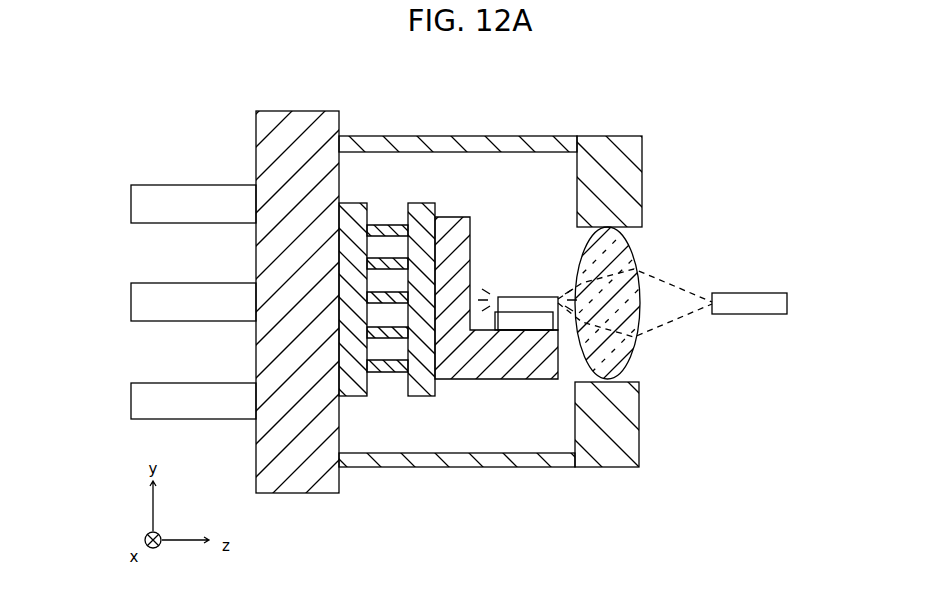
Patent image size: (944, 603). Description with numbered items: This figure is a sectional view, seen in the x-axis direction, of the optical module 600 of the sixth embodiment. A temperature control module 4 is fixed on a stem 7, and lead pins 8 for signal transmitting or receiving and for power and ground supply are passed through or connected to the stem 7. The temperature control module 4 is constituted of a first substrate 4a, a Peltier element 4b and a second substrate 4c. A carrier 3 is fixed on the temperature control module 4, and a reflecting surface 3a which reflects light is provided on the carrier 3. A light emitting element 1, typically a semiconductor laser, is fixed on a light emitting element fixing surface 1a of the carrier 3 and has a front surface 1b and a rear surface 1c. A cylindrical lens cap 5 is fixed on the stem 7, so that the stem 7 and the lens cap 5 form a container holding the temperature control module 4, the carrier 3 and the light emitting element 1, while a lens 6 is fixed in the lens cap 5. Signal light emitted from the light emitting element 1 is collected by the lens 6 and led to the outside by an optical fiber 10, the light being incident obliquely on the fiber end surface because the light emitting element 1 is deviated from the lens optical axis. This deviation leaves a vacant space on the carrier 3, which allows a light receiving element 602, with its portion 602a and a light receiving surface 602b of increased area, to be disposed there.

The optical module 600 is at (272, 72).
The stem 7 is at (272, 493).
The lead pins 8 is at (152, 197).
The cylindrical lens cap 5 is at (624, 144).
The temperature control module 4 is at (409, 300).
The first substrate 4a is at (357, 206).
The Peltier element 4b is at (368, 199).
The second substrate 4c is at (425, 206).
The carrier 3 is at (492, 300).
The reflecting surface 3a is at (470, 225).
The light emitting element 1 is at (521, 304).
The light emitting element fixing surface 1a is at (548, 310).
The front surface 1b is at (557, 298).
The rear surface 1c is at (499, 297).
The light receiving element 602 is at (513, 316).
The first portion of bonding layer 602a is at (522, 322).
The light receiving surface 602b is at (528, 325).
The lens 6 is at (625, 362).
The optical fiber 10 is at (745, 314).